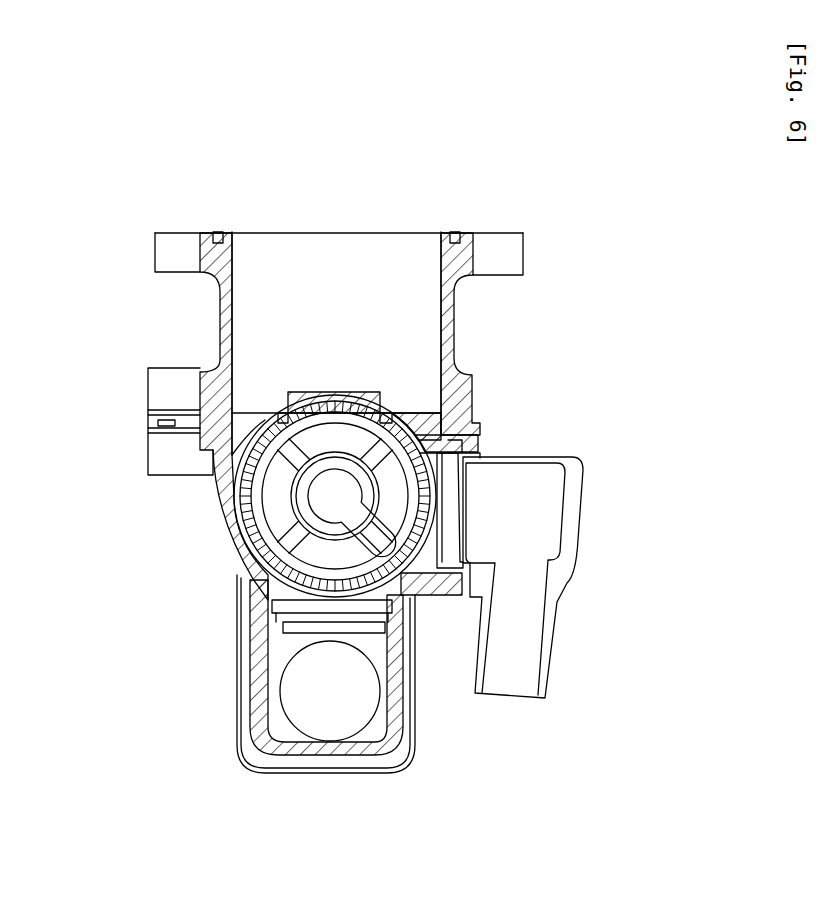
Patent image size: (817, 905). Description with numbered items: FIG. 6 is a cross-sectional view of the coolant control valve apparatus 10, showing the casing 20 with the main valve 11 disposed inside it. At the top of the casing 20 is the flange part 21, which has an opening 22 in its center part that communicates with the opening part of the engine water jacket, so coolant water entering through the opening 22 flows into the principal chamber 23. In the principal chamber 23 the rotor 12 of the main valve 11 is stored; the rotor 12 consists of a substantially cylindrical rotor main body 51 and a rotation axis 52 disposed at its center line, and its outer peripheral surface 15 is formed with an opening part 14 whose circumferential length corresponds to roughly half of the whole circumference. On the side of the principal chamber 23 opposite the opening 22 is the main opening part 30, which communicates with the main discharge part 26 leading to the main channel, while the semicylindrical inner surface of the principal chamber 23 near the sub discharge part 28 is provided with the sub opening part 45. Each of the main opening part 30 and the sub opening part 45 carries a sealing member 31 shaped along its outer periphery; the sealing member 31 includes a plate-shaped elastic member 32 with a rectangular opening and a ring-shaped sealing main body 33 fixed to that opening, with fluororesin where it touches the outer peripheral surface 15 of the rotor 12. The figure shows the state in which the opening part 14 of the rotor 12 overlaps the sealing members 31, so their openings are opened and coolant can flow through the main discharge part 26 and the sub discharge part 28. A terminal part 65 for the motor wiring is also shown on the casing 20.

The coolant control valve apparatus 10 is at (500, 378).
The main valve 11 is at (324, 370).
The rotor 12 is at (282, 430).
The opening part 14 is at (290, 585).
The outer peripheral surface 15 is at (230, 492).
The casing 20 is at (455, 310).
The flange part 21 is at (513, 250).
The opening 22 is at (438, 233).
The principal chamber 23 is at (250, 572).
The main discharge part 26 is at (340, 720).
The sub discharge part 28 is at (580, 535).
The main opening part 30 is at (245, 735).
The sealing member 31 is at (476, 440).
The elastic member 32 is at (452, 540).
The sealing main body 33 is at (490, 444).
The sub opening part 45 is at (462, 470).
The rotor main body 51 is at (375, 418).
The rotation axis 52 is at (337, 492).
The terminal part 65 is at (165, 462).